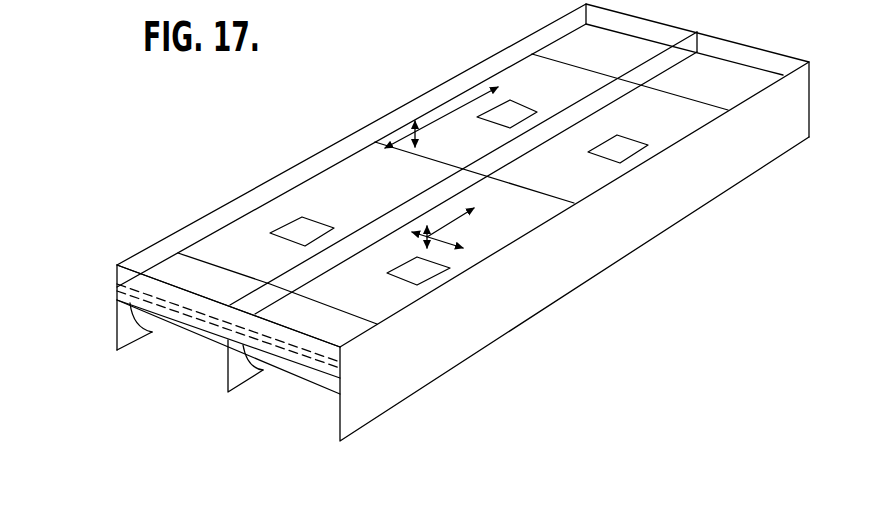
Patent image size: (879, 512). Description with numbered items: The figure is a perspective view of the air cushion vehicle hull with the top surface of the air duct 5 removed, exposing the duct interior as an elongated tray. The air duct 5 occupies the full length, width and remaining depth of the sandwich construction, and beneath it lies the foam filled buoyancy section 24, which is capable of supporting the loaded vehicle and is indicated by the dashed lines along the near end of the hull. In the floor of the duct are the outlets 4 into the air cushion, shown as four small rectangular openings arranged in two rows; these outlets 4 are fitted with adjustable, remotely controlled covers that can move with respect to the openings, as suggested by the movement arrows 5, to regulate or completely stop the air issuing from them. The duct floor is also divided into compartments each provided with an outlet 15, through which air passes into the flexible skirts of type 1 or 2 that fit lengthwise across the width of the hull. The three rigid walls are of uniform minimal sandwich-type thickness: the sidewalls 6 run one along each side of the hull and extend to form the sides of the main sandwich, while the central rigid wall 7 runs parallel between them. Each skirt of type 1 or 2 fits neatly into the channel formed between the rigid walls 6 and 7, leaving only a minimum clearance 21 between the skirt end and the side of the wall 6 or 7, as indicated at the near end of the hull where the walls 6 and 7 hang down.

The flexible skirt type 1 is at (228, 355).
The flexible skirt type 2 is at (194, 331).
The outlet 4 is at (459, 192).
The air duct 5 is at (453, 145).
The rigid sidewall 6 is at (463, 289).
The central rigid wall 7 is at (245, 366).
The outlet into the flexible skirts 15 is at (450, 183).
The minimum clearance 21 is at (152, 334).
The foam filled buoyancy section 24 is at (129, 294).